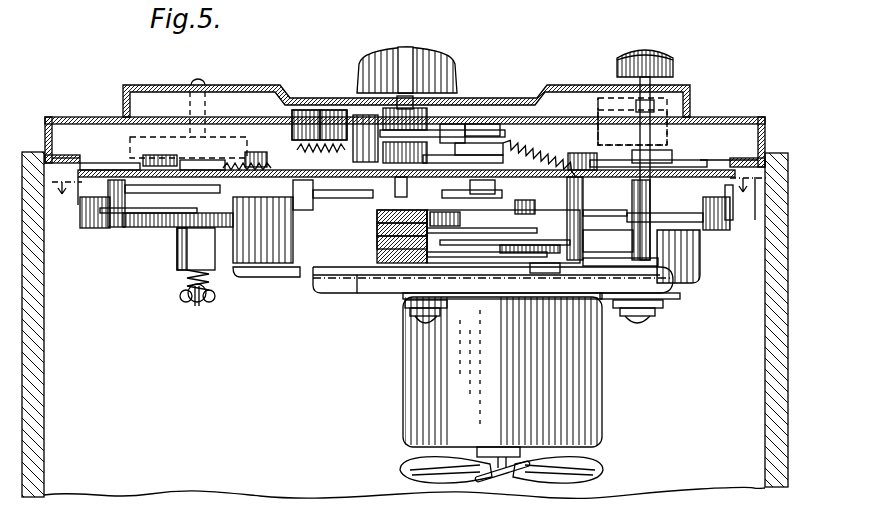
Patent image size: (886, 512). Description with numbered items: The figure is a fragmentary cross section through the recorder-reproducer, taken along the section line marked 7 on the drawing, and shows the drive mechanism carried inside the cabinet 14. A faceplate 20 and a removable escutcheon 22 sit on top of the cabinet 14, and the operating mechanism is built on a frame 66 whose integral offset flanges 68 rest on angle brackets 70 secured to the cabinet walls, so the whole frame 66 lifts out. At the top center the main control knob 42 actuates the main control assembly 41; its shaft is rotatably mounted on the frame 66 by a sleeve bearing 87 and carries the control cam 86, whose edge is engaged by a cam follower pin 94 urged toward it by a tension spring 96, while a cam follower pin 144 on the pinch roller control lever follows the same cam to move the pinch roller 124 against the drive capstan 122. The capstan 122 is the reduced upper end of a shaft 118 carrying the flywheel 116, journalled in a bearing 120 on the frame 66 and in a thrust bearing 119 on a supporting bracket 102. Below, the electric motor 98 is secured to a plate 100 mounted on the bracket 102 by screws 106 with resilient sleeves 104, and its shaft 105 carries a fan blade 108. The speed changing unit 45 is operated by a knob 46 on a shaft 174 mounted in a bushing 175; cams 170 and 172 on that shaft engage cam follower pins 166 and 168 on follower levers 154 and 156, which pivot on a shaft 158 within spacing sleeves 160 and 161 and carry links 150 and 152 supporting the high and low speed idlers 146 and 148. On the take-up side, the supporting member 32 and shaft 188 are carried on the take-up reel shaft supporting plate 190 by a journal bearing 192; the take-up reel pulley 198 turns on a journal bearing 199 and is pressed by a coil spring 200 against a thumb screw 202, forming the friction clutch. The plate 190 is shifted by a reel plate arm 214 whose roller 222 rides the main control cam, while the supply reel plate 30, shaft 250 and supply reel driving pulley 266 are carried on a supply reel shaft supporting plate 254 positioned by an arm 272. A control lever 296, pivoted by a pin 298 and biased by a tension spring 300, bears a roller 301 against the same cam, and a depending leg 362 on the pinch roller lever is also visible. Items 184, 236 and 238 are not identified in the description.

The section line 7- 7 is at (409, 198).
The cabinet 14 is at (781, 152).
The faceplate 20 is at (98, 117).
The removable escutcheon 22 is at (178, 85).
The plate 30 is at (622, 124).
The supporting member 32 is at (151, 140).
The main control assembly 41 is at (468, 88).
The main control knob 42 is at (430, 51).
The speed changing unit 45 is at (679, 152).
The speed control knob 46 is at (670, 64).
The frame 66 is at (96, 164).
The offset flanges 68 is at (65, 156).
The angle brackets 70 is at (77, 205).
The control cam 86 is at (520, 98).
The sleeve bearing 87 is at (405, 135).
The cam follower pin 94 is at (482, 130).
The tension spring 96 is at (522, 158).
The electric motor 98 is at (602, 377).
The plate 100 is at (500, 296).
The supporting bracket 102 is at (390, 293).
The resilient sleeves 104 is at (672, 323).
The motor shaft 105 is at (501, 455).
The screws 106 is at (412, 322).
The fan blade 108 is at (596, 470).
The flywheel 116 is at (286, 277).
The shaft 118 is at (316, 208).
The thrust bearing 119 is at (340, 293).
The bearing 120 is at (342, 215).
The drive capstan 122 is at (336, 110).
The pinch roller 124 is at (300, 110).
The cam follower pin 144 is at (335, 136).
The high speed idler 146 is at (402, 237).
The low speed idler 148 is at (402, 219).
The link 150 is at (402, 244).
The link 152 is at (402, 231).
The follower lever 154 is at (546, 283).
The follower lever 156 is at (549, 228).
The shaft 158 is at (584, 265).
The spacing sleeve 160 is at (566, 244).
The spacing sleeve 161 is at (646, 217).
The cam follower pin 166 is at (656, 250).
The cam follower pin 168 is at (660, 213).
The cam 170 is at (608, 241).
The cam 172 is at (712, 230).
The shaft 174 is at (652, 105).
The bushing 175 is at (583, 210).
The plate 184 is at (645, 155).
The shaft 188 is at (200, 85).
The take-up reel shaft supporting plate 190 is at (164, 153).
The journal bearing 192 is at (196, 198).
The take-up reel pulley 198 is at (92, 228).
The journal bearing 199 is at (177, 258).
The coil spring 200 is at (187, 278).
The thumb screw 202 is at (196, 305).
The reel plate arm 214 is at (276, 205).
The roller 222 is at (498, 234).
The post 236 is at (118, 226).
The rack 238 is at (166, 226).
The shaft 250 is at (600, 98).
The supply reel shaft supporting plate 254 is at (592, 162).
The supply reel driving pulley 266 is at (735, 220).
The arm 272 is at (481, 180).
The control lever 296 is at (485, 156).
The pin 298 is at (435, 148).
The tension spring 300 is at (206, 155).
The roller 301 is at (398, 197).
The depending leg 362 is at (255, 152).